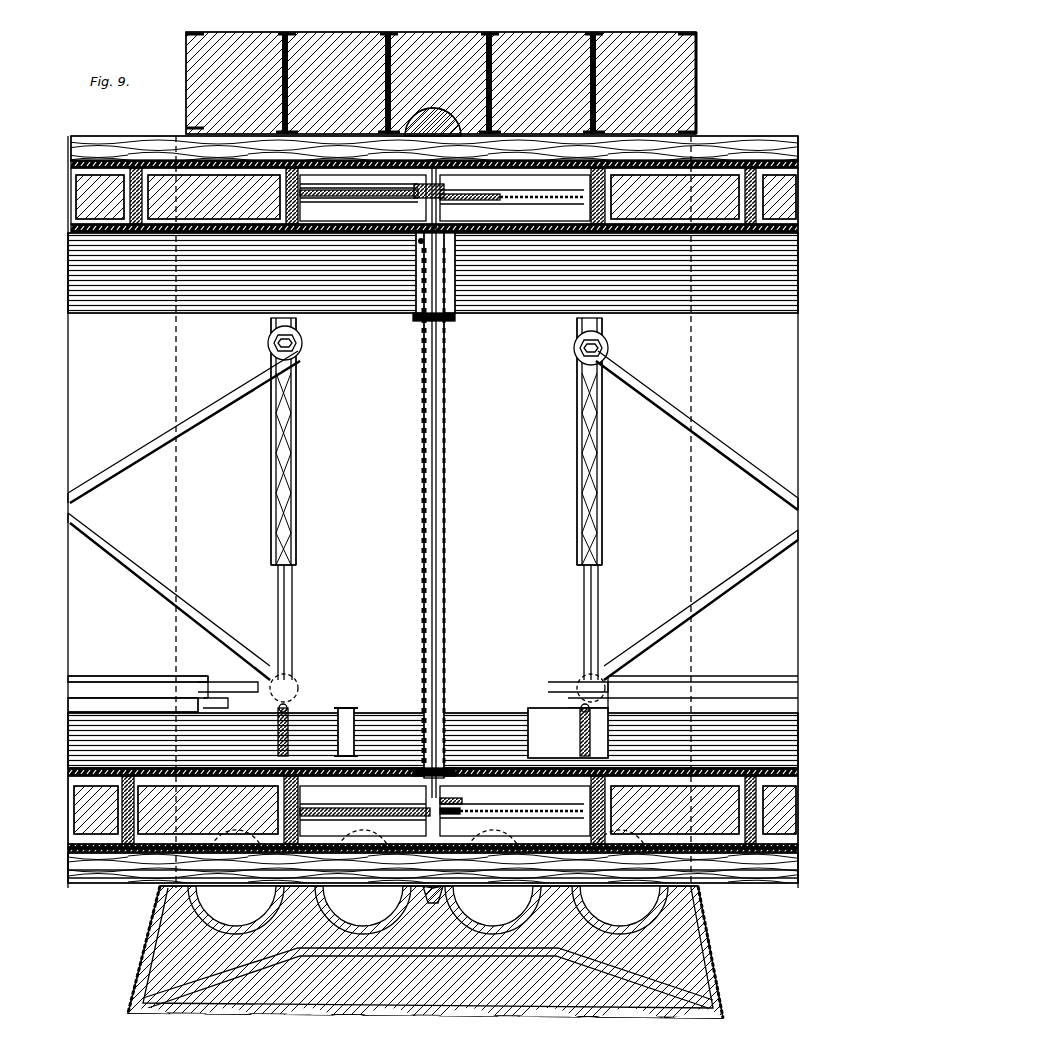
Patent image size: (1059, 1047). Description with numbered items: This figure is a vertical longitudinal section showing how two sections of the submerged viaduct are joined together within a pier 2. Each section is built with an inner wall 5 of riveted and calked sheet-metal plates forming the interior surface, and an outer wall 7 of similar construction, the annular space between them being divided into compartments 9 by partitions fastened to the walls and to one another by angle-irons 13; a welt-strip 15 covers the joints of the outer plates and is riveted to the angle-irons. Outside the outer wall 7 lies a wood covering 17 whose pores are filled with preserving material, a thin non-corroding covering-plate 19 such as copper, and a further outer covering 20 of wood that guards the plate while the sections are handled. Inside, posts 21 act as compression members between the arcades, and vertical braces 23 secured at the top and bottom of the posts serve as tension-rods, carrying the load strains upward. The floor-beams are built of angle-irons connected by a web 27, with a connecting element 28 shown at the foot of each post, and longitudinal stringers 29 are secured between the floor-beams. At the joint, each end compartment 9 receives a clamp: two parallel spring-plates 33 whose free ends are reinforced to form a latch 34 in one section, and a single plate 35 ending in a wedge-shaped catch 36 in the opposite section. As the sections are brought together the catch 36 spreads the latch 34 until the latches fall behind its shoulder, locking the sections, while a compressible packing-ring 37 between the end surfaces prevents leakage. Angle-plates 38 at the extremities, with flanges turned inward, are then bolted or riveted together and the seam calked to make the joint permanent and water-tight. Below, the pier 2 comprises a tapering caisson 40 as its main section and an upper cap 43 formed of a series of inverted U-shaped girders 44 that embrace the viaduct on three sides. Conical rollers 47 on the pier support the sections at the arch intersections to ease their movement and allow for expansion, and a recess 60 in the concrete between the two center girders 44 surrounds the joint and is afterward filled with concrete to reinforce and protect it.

The pier 2 is at (498, 1000).
The inner wall 5 is at (62, 766).
The outer wall 7 is at (62, 838).
The compartments 9 is at (44, 804).
The angle-irons 13 is at (439, 506).
The welt-strip 15 is at (62, 852).
The covering 17 is at (58, 866).
The covering-plate 19 is at (72, 866).
The outer covering 20 is at (120, 868).
The posts 21 is at (286, 620).
The vertical braces 23 is at (104, 462).
The web 27 is at (276, 714).
The pin 28 is at (270, 700).
The longitudinal stringers 29 is at (60, 718).
The spring-plates 33 is at (345, 178).
The latch 34 is at (512, 504).
The single plate 35 is at (522, 494).
The wedge-shaped catch 36 is at (410, 196).
The packing-ring 37 is at (452, 796).
The angle-plates 38 is at (414, 612).
The caisson 40 is at (708, 978).
The cap 43 is at (688, 98).
The girders 44 is at (284, 26).
The conical rollers 47 is at (428, 882).
The recess 60 is at (397, 1018).